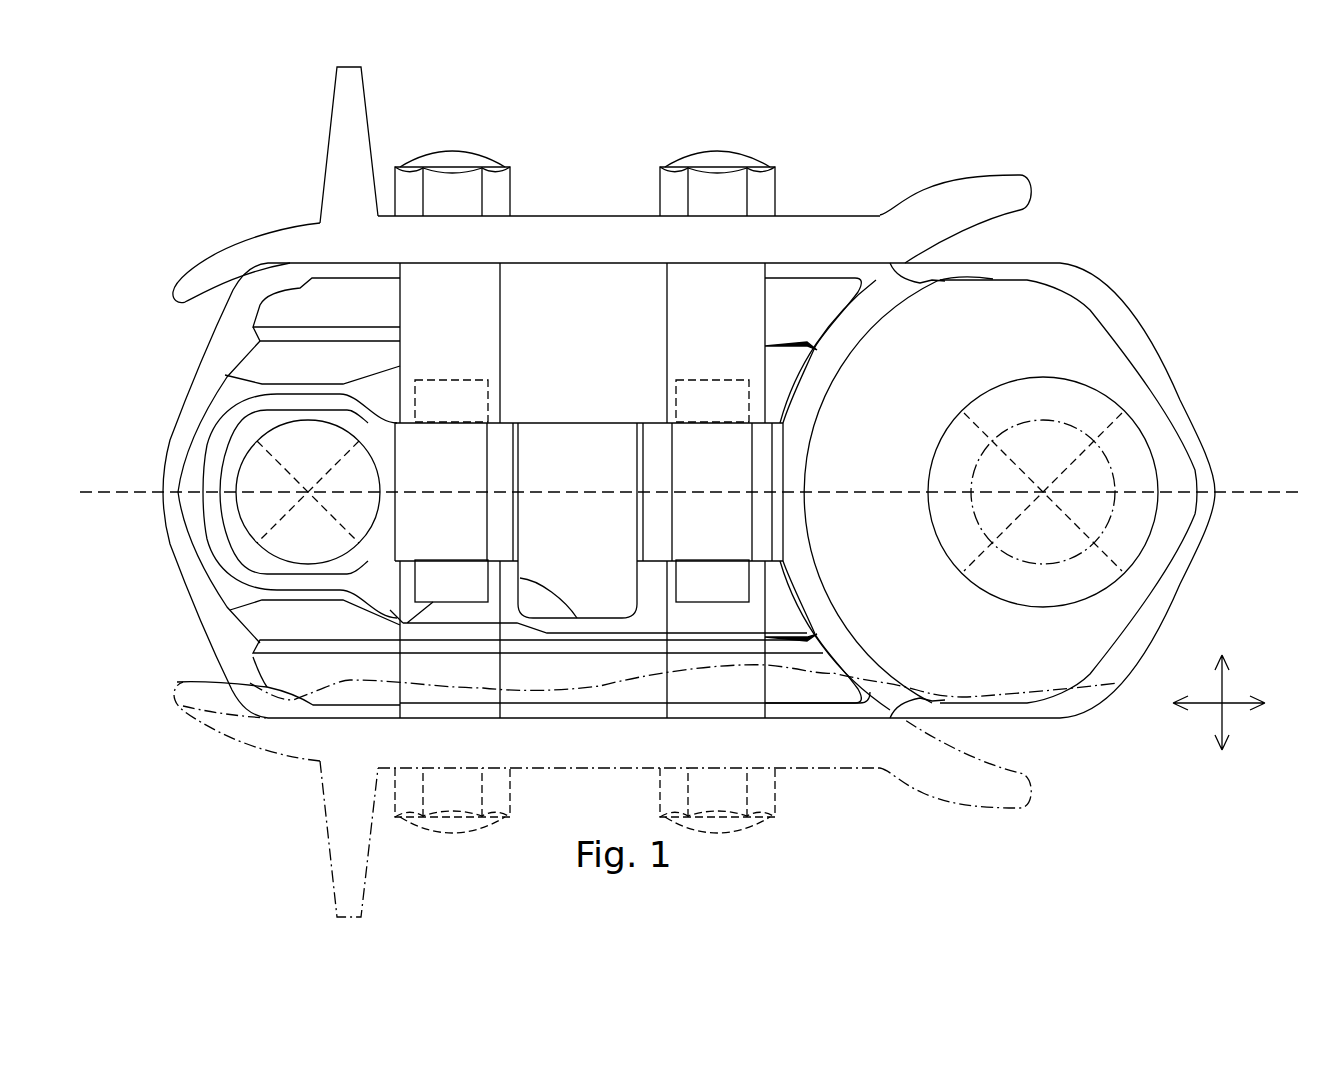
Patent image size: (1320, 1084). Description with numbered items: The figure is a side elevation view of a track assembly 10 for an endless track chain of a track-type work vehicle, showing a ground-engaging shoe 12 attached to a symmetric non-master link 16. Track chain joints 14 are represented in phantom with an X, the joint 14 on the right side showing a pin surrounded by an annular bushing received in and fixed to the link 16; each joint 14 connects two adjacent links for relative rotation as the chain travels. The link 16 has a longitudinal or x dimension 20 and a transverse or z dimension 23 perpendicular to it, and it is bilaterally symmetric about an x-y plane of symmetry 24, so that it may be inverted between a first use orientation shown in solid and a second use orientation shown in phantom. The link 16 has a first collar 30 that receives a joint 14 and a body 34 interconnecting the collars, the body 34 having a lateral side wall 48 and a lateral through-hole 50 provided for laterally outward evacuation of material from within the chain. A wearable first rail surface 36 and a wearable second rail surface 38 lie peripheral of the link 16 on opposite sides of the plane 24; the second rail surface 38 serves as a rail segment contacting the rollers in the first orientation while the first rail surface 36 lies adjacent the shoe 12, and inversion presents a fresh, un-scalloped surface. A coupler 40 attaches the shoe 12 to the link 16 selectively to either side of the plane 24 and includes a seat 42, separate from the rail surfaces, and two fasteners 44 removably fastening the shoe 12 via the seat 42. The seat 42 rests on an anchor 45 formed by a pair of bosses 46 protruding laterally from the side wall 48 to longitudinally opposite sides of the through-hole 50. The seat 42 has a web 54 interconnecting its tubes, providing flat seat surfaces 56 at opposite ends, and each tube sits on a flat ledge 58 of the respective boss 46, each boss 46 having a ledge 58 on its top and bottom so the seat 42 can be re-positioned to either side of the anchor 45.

The track assembly 10 is at (247, 167).
The ground-engaging shoe 12 is at (343, 107).
The track chain joint 14 is at (253, 463).
The link 16 is at (1130, 228).
The longitudinal dimension 20 is at (1203, 700).
The transverse dimension 23 is at (1213, 722).
The x-y plane of symmetry 24 is at (1247, 492).
The first collar 30 is at (222, 543).
The body 34 is at (823, 300).
The first rail surface 36 is at (867, 263).
The second rail surface 38 is at (527, 693).
The coupler 40 is at (745, 357).
The seat 42 is at (550, 267).
The fastener 44 is at (450, 153).
The anchor 45 is at (637, 352).
The boss 46 is at (500, 460).
The lateral side wall 48 is at (783, 345).
The lateral through-hole 50 is at (577, 618).
The web 54 is at (523, 297).
The flat seat surface 56 is at (615, 263).
The flat ledge 58 is at (435, 420).